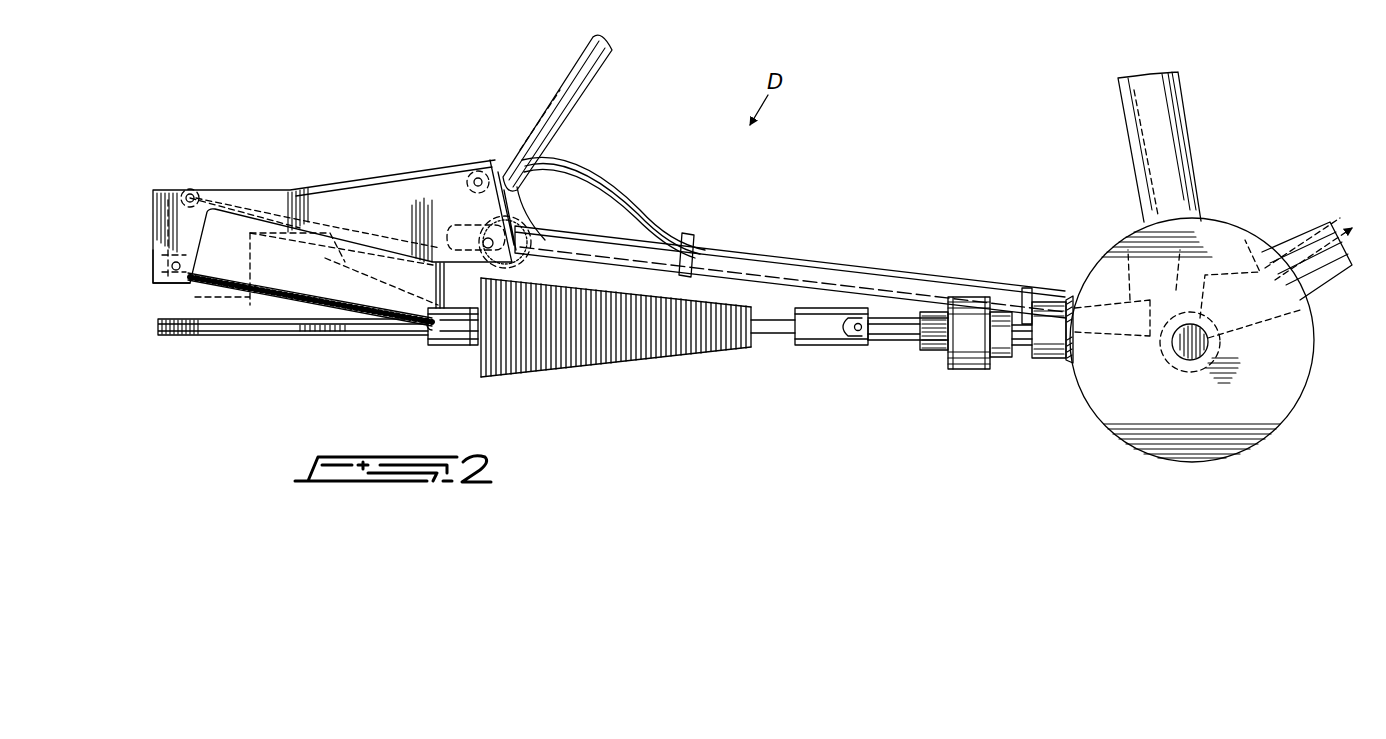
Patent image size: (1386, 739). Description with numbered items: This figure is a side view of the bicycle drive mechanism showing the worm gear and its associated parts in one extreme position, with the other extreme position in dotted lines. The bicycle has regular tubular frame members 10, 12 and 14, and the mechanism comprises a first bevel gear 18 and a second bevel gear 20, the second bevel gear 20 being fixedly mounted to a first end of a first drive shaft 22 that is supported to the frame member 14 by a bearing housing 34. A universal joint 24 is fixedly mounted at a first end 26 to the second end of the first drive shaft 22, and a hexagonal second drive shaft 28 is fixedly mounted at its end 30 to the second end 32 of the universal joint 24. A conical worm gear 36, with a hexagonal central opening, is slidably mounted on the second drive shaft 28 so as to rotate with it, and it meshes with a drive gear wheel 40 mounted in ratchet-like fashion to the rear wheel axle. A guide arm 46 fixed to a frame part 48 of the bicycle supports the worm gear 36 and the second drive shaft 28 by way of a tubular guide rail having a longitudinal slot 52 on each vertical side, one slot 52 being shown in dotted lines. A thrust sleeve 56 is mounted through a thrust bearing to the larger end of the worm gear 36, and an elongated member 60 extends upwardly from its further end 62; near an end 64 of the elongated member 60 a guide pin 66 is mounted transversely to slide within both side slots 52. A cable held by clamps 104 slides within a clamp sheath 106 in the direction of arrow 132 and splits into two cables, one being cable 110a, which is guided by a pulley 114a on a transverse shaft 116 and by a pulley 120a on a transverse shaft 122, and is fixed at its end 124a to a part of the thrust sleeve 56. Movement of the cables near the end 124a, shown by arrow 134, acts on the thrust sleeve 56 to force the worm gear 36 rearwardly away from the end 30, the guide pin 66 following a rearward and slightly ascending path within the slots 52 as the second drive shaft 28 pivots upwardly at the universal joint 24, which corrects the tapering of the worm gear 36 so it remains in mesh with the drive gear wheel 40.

The frame member 10 is at (1335, 280).
The frame member 12 is at (1132, 107).
The frame member 14 is at (795, 275).
The first bevel gear 18 is at (1137, 400).
The second bevel gear 20 is at (1066, 365).
The first drive shaft 22 is at (378, 185).
The universal joint 24 is at (862, 347).
The first end of universal joint 26 is at (912, 342).
The second drive shaft 28 is at (345, 340).
The end of second drive shaft 30 is at (795, 328).
The second end of universal joint 32 is at (810, 345).
The bearing housing 34 is at (970, 315).
The conical worm gear 36 is at (660, 340).
The drive gear wheel 40 is at (520, 238).
The guide arm 46 is at (383, 221).
The curved arm 48 is at (518, 200).
The slot 52 is at (262, 215).
The thrust sleeve 56 is at (462, 350).
The elongated member 60 is at (431, 291).
The further end of thrust sleeve 62 is at (456, 352).
The end of elongated member 64 is at (433, 268).
The guide pin 66 is at (441, 263).
The clamp 104 is at (690, 242).
The clamp sheath 106 is at (885, 265).
The cable 110a is at (258, 300).
The pulley 114a is at (188, 194).
The transverse shaft 116 is at (192, 196).
The pulley 120a is at (170, 278).
The transverse shaft 122 is at (190, 280).
The end of cable 124a is at (428, 330).
The arrow 132 is at (1312, 213).
The arrow 134 is at (322, 292).